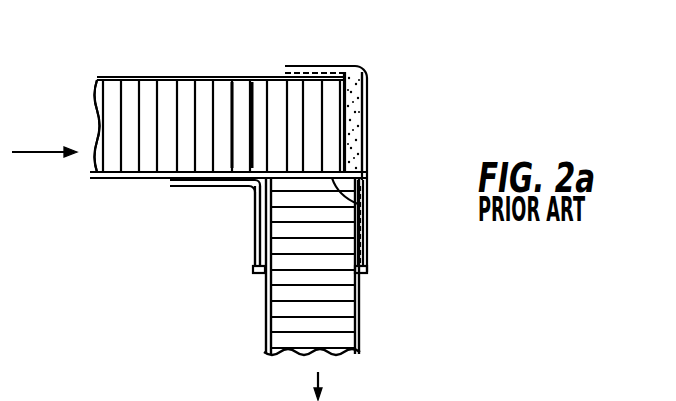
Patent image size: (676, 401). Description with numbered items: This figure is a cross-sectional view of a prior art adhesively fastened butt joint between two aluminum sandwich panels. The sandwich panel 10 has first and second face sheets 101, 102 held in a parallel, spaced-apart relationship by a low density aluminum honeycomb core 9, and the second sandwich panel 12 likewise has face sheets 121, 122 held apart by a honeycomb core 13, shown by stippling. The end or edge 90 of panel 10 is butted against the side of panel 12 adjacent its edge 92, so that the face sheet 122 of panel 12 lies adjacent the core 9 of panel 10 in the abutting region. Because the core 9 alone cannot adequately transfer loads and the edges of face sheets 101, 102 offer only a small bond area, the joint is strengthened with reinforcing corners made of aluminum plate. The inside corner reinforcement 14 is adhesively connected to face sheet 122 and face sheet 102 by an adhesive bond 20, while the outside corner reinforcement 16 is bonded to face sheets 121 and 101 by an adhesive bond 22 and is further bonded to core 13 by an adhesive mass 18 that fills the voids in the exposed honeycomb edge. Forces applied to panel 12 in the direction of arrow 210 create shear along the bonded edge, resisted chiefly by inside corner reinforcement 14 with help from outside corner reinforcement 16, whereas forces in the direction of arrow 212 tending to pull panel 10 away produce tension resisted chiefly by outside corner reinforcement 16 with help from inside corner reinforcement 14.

The honeycomb core 9 is at (297, 338).
The sandwich panel 10 is at (344, 310).
The face sheet 101 is at (362, 340).
The face sheet 102 is at (265, 328).
The sandwich panel 12 is at (127, 95).
The face sheet 121 is at (150, 78).
The face sheet 122 is at (117, 180).
The honeycomb core 13 is at (110, 128).
The inside corner reinforcement 14 is at (254, 248).
The outside corner reinforcement 16 is at (322, 66).
The adhesive mass 18 is at (355, 138).
The adhesive bond 20 is at (170, 183).
The adhesive bond 22 is at (285, 74).
The edge of panel 90 is at (360, 206).
The edge of panel 92 is at (345, 101).
The arrow 210 is at (27, 152).
The arrow 212 is at (320, 378).